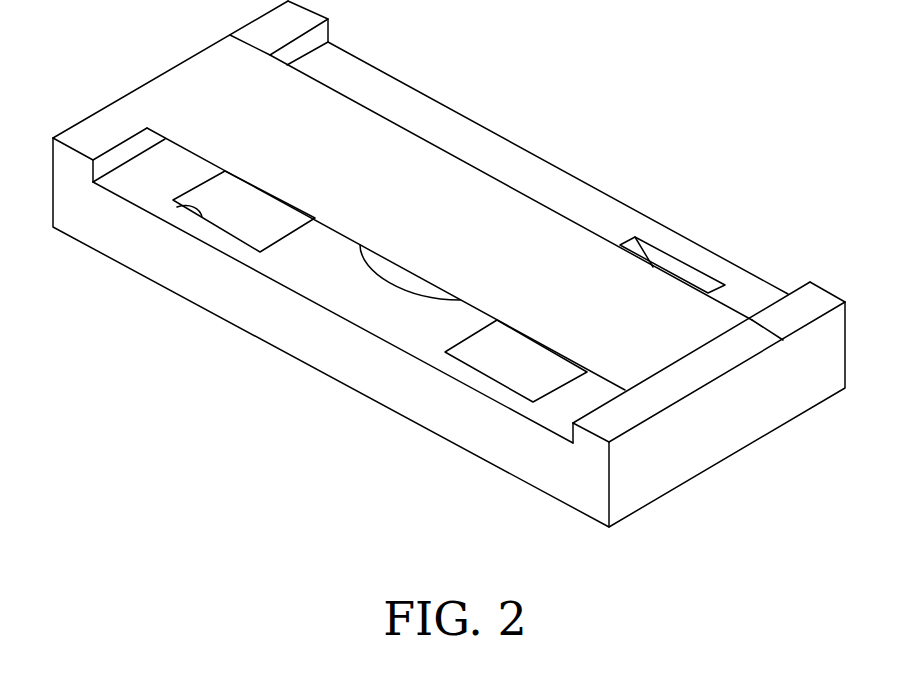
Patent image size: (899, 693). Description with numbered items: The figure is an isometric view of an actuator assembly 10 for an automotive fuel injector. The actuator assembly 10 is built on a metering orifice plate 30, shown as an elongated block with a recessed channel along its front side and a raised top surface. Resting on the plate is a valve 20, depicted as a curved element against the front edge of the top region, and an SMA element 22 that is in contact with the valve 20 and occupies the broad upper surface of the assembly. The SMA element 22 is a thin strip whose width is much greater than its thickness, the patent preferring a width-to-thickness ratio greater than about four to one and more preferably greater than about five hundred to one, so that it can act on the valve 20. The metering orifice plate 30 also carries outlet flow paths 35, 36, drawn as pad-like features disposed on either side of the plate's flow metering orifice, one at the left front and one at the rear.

The actuator assembly 10 is at (712, 136).
The valve 20 is at (387, 277).
The SMA element 22 is at (445, 178).
The metering orifice plate 30 is at (430, 430).
The outlet flow path 35 is at (177, 206).
The outlet flow path 36 is at (675, 257).